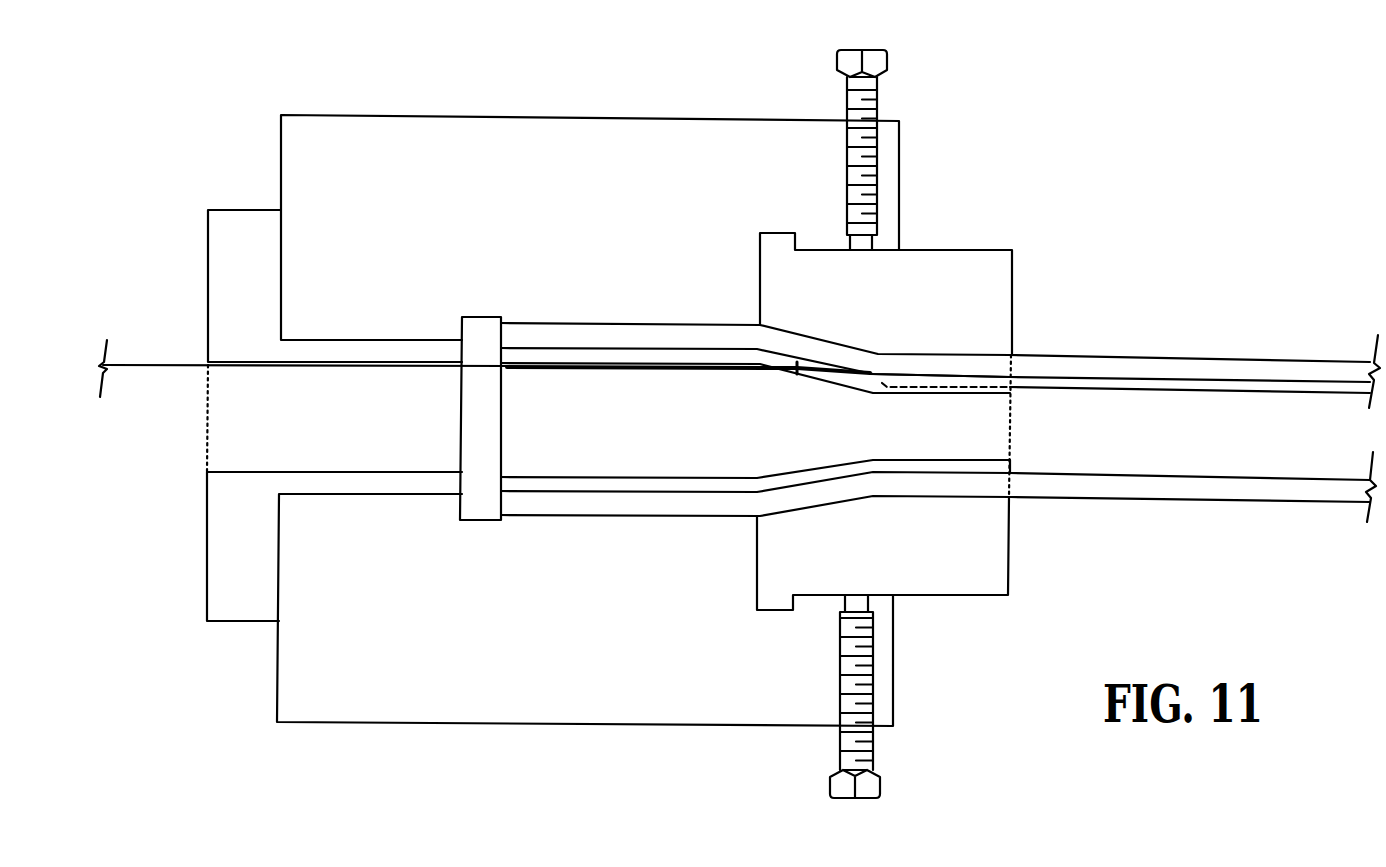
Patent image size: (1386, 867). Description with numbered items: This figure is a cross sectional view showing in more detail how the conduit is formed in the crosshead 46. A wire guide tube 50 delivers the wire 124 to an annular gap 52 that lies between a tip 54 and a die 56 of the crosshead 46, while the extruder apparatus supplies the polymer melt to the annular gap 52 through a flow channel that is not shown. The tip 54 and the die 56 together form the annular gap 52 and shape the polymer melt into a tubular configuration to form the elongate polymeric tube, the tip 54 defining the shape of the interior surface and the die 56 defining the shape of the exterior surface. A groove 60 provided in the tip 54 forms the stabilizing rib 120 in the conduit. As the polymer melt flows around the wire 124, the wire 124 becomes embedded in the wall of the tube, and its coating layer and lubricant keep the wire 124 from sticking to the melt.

The crosshead 46 is at (641, 722).
The wire guide tube 50 is at (635, 367).
The annular gap 52 is at (968, 366).
The tip 54 is at (942, 377).
The die 56 is at (907, 358).
The groove 60 is at (980, 385).
The stabilizing rib 120 is at (1299, 388).
The wire 124 is at (206, 361).